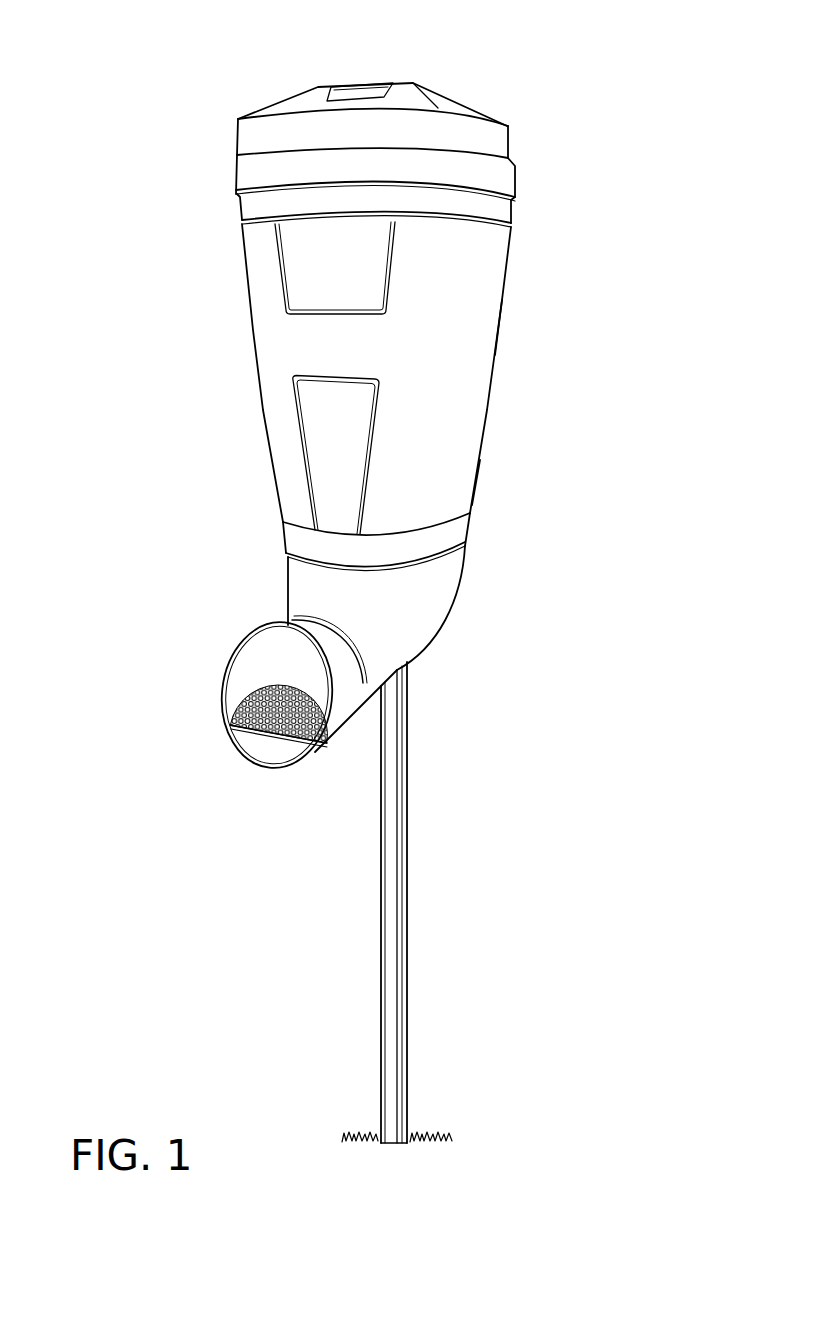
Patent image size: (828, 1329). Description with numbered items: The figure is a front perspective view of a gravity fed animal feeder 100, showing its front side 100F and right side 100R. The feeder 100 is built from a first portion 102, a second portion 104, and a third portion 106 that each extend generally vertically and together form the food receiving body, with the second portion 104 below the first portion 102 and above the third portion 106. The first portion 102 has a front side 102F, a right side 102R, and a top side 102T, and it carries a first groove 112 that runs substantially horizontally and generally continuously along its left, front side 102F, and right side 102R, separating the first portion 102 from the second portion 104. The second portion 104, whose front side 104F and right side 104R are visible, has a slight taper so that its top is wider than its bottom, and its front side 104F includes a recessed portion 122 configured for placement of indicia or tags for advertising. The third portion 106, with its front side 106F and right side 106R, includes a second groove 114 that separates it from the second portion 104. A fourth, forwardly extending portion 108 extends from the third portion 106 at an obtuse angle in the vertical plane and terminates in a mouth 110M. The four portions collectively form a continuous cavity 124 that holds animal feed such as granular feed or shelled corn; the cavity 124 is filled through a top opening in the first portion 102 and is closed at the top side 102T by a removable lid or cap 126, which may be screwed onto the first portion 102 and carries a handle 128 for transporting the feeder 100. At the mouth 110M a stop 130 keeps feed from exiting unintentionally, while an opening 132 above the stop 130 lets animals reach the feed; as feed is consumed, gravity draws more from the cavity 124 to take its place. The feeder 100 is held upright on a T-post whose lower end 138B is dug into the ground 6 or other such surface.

The gravity fed animal feeder 100 is at (614, 134).
The right side 100R is at (478, 335).
The front side 100F is at (322, 431).
The first portion 102 is at (510, 181).
The top side 102T is at (238, 121).
The front side 102F is at (262, 133).
The right side 102R is at (474, 167).
The second portion 104 is at (467, 389).
The front side 104F is at (323, 486).
The right side 104R is at (457, 495).
The third portion 106 is at (454, 572).
The front side 106F is at (287, 553).
The right side 106R is at (465, 560).
The fourth portion 108 is at (380, 659).
The mouth 110M is at (208, 705).
The first groove 112 is at (262, 205).
The second groove 114 is at (300, 537).
The recessed portion 122 is at (323, 338).
The cavity 124 is at (241, 699).
The lid 126 is at (265, 108).
The handle 128 is at (352, 84).
The stop 130 is at (283, 752).
The opening 132 is at (263, 695).
The lower end of the T-post 138B is at (393, 1145).
The ground surface 6 is at (436, 1137).